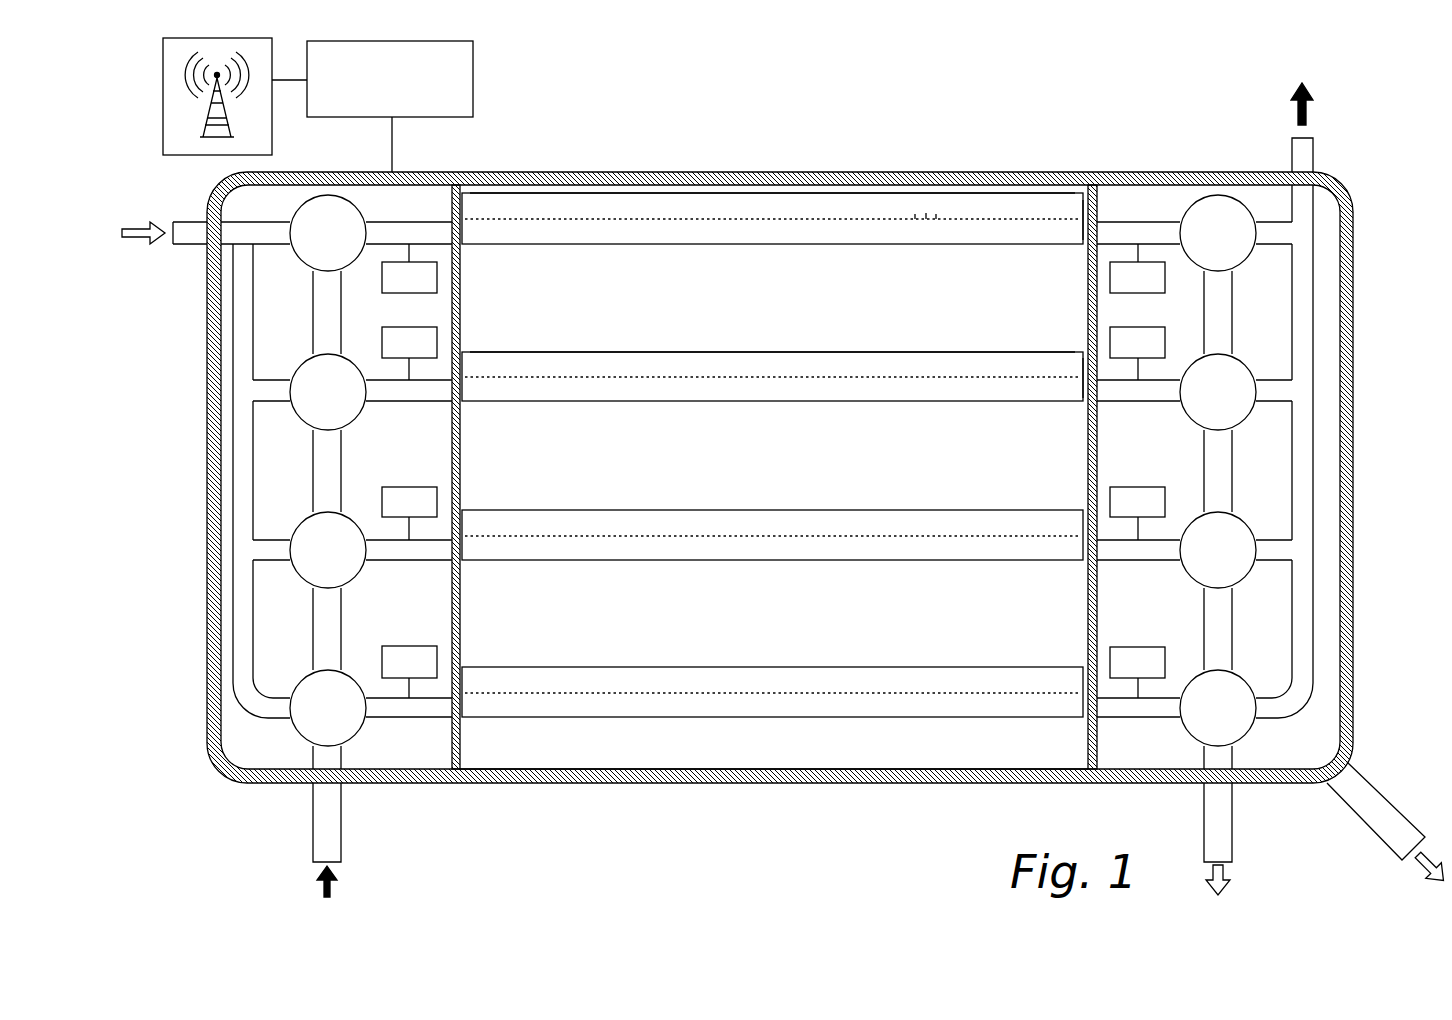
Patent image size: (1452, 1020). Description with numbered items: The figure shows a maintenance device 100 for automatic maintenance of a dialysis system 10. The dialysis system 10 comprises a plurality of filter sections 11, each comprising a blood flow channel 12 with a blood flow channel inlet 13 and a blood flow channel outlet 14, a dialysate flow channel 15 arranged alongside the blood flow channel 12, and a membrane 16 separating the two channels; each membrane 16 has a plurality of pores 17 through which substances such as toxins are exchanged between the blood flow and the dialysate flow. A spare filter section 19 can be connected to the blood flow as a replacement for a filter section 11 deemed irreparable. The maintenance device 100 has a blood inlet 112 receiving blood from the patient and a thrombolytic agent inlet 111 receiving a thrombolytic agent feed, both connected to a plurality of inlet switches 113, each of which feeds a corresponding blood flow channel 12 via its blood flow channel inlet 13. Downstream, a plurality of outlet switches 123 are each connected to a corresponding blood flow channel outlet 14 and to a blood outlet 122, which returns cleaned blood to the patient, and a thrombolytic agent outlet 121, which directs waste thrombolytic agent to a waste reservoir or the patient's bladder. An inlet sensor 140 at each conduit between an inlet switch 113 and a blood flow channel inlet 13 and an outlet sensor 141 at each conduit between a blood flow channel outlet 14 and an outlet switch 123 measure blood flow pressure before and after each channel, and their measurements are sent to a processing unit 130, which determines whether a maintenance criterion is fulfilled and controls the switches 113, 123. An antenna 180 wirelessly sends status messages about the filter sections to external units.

The dialysis system 10 is at (889, 102).
The filter section 11 is at (738, 193).
The blood flow channel 12 is at (583, 232).
The blood flow channel inlet 13 is at (455, 228).
The blood flow channel outlet 14 is at (1093, 232).
The dialysate flow channel 15 is at (668, 205).
The membrane 16 is at (1040, 217).
The pores 17 is at (936, 219).
The spare filter section 19 is at (825, 718).
The maintenance device 100 is at (137, 110).
The thrombolytic agent inlet 111 is at (190, 235).
The blood inlet 112 is at (328, 821).
The inlet switch 113 is at (317, 270).
The thrombolytic agent outlet 121 is at (1222, 830).
The blood outlet 122 is at (1305, 155).
The outlet switch 123 is at (1228, 248).
The processing unit 130 is at (475, 64).
The inlet sensor 140 is at (437, 277).
The outlet sensor 141 is at (1145, 277).
The antenna 180 is at (160, 139).